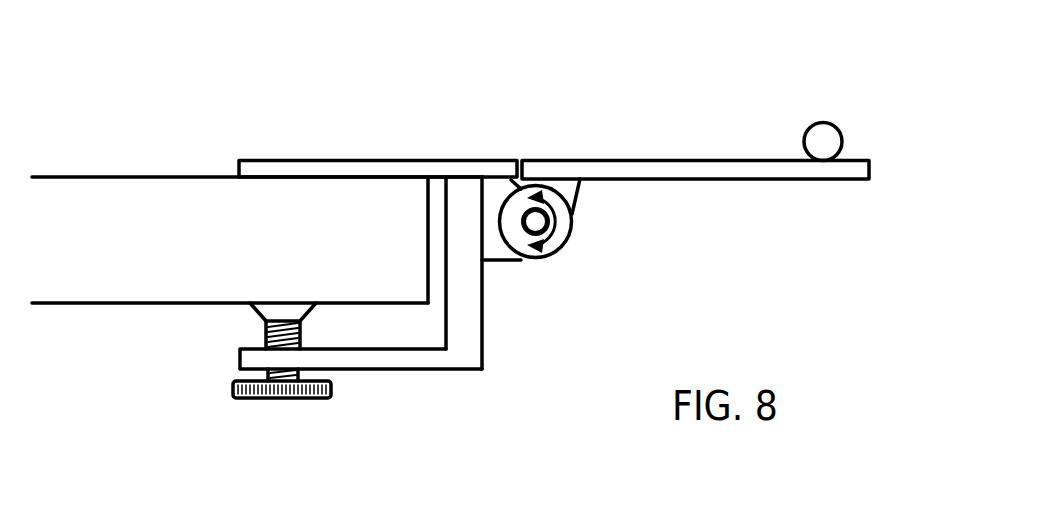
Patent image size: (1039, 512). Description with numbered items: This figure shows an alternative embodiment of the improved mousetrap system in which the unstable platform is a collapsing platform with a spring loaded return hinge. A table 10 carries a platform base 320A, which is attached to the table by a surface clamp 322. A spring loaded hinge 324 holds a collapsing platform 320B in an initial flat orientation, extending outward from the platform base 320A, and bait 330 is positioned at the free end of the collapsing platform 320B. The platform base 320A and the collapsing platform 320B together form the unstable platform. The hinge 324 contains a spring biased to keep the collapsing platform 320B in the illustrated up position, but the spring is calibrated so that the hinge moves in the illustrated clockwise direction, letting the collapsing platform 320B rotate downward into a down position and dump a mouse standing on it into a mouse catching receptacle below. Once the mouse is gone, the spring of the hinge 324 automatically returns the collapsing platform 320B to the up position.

The table 10 is at (163, 190).
The platform base 320A is at (405, 155).
The collapsing platform 320B is at (692, 160).
The surface clamp 322 is at (302, 402).
The spring loaded hinge 324 is at (560, 253).
The bait 330 is at (834, 120).